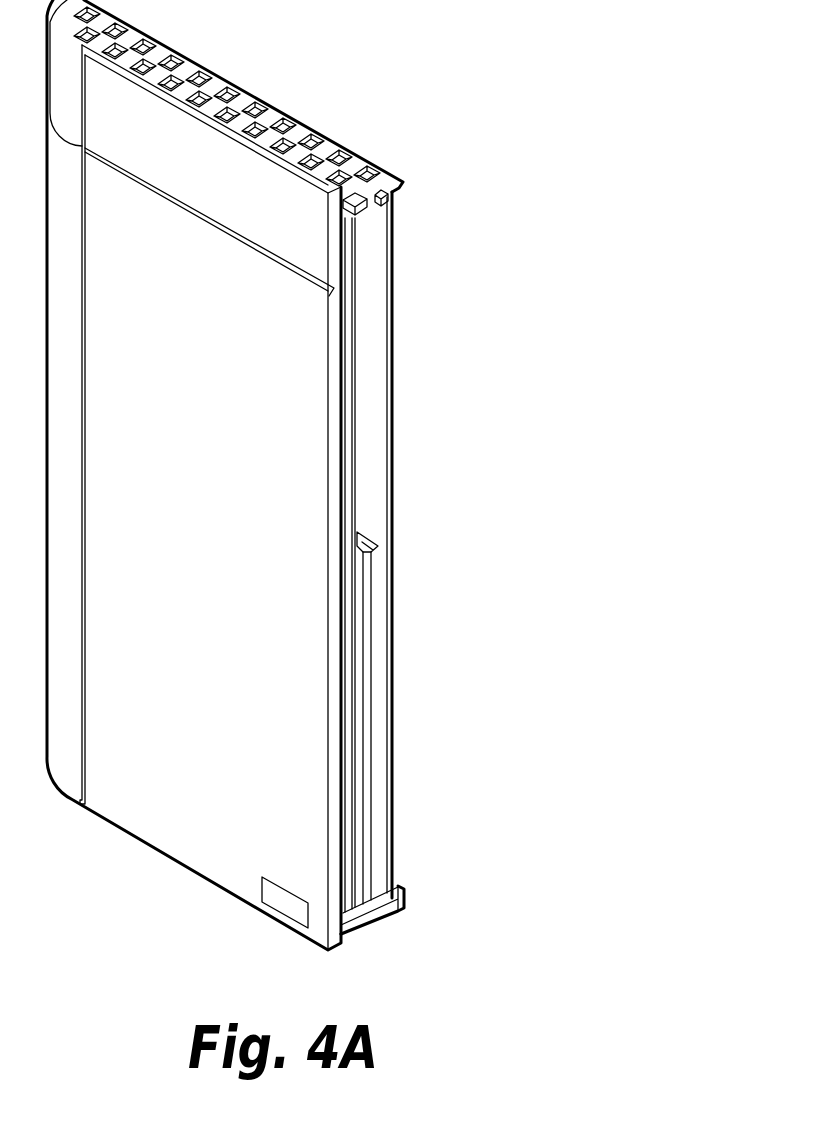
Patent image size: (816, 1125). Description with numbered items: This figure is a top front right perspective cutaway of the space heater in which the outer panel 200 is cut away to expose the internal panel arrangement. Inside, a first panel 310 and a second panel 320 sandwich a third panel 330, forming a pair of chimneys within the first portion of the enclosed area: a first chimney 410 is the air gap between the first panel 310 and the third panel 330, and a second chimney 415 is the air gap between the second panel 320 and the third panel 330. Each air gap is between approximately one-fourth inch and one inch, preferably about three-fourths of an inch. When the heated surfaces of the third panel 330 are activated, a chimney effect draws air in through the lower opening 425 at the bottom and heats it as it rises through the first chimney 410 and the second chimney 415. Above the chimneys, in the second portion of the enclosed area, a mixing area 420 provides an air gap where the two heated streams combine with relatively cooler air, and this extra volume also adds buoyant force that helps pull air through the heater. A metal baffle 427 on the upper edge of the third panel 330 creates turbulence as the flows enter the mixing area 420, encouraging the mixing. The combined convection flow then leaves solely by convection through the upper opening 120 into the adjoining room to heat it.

The upper opening 120 is at (343, 139).
The outer panel 200 is at (160, 837).
The first panel 310 is at (352, 415).
The second panel 320 is at (392, 495).
The third panel 330 is at (362, 620).
The first chimney 410 is at (365, 726).
The second chimney 415 is at (384, 798).
The mixing area 420 is at (368, 288).
The lower opening 425 is at (375, 929).
The metal baffle 427 is at (364, 543).